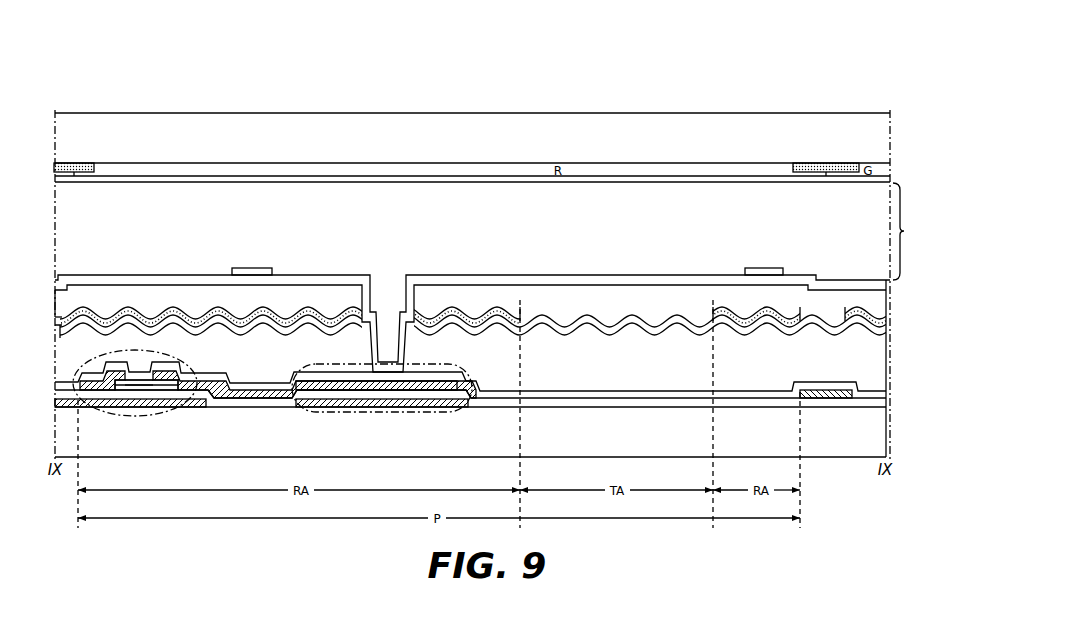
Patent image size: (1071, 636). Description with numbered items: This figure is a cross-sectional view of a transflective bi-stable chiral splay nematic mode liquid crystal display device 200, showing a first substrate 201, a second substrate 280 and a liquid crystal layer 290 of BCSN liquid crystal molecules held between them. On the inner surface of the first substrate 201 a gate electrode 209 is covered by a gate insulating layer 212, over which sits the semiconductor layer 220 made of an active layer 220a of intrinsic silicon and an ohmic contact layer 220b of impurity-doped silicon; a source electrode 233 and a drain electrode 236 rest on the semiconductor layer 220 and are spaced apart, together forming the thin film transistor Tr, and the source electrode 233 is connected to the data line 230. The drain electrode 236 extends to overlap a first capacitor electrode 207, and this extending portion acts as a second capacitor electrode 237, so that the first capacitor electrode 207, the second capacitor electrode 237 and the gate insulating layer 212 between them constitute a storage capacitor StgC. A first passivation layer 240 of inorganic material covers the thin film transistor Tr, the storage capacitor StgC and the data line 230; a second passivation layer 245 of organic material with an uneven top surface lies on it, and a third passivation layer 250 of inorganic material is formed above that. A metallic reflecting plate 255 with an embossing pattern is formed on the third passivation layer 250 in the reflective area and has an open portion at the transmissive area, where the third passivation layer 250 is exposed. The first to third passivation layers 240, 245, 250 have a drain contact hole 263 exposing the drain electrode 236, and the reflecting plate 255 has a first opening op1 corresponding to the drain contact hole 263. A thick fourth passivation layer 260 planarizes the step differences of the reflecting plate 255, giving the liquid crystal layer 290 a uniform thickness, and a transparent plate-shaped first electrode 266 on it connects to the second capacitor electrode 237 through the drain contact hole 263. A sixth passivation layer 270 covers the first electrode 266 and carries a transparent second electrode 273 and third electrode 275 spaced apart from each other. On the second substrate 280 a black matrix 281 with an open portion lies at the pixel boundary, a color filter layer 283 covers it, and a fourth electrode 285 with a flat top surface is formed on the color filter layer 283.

The transflective bi-stable chiral splay nematic mode liquid crystal display device 200 is at (839, 96).
The first substrate 201 is at (856, 453).
The first capacitor electrode 207 is at (340, 407).
The gate electrode 209 is at (133, 410).
The gate insulating layer 212 is at (585, 402).
The semiconductor layer 220 is at (165, 389).
The active layer 220a is at (153, 386).
The ohmic contact layer 220b is at (173, 383).
The data line 230 is at (826, 391).
The source electrode 233 is at (115, 371).
The drain electrode 236 is at (166, 370).
The second capacitor electrode 237 is at (328, 381).
The first passivation layer 240 is at (672, 394).
The second passivation layer 245 is at (187, 346).
The third passivation layer 250 is at (241, 331).
The reflecting plate 255 is at (300, 322).
The fourth passivation layer 260 is at (112, 298).
The drain contact hole 263 is at (375, 297).
The first electrode 266 is at (158, 290).
The sixth passivation layer 270 is at (300, 283).
The second electrode 273 is at (252, 268).
The third electrode 275 is at (760, 268).
The second substrate 280 is at (858, 138).
The black matrix 281 is at (76, 163).
The color filter layer 283 is at (222, 172).
The fourth electrode 285 is at (178, 180).
The liquid crystal layer 290 is at (911, 231).
The thin film transistor Tr is at (106, 408).
The storage capacitor StgC is at (382, 407).
The first opening op1 is at (387, 312).